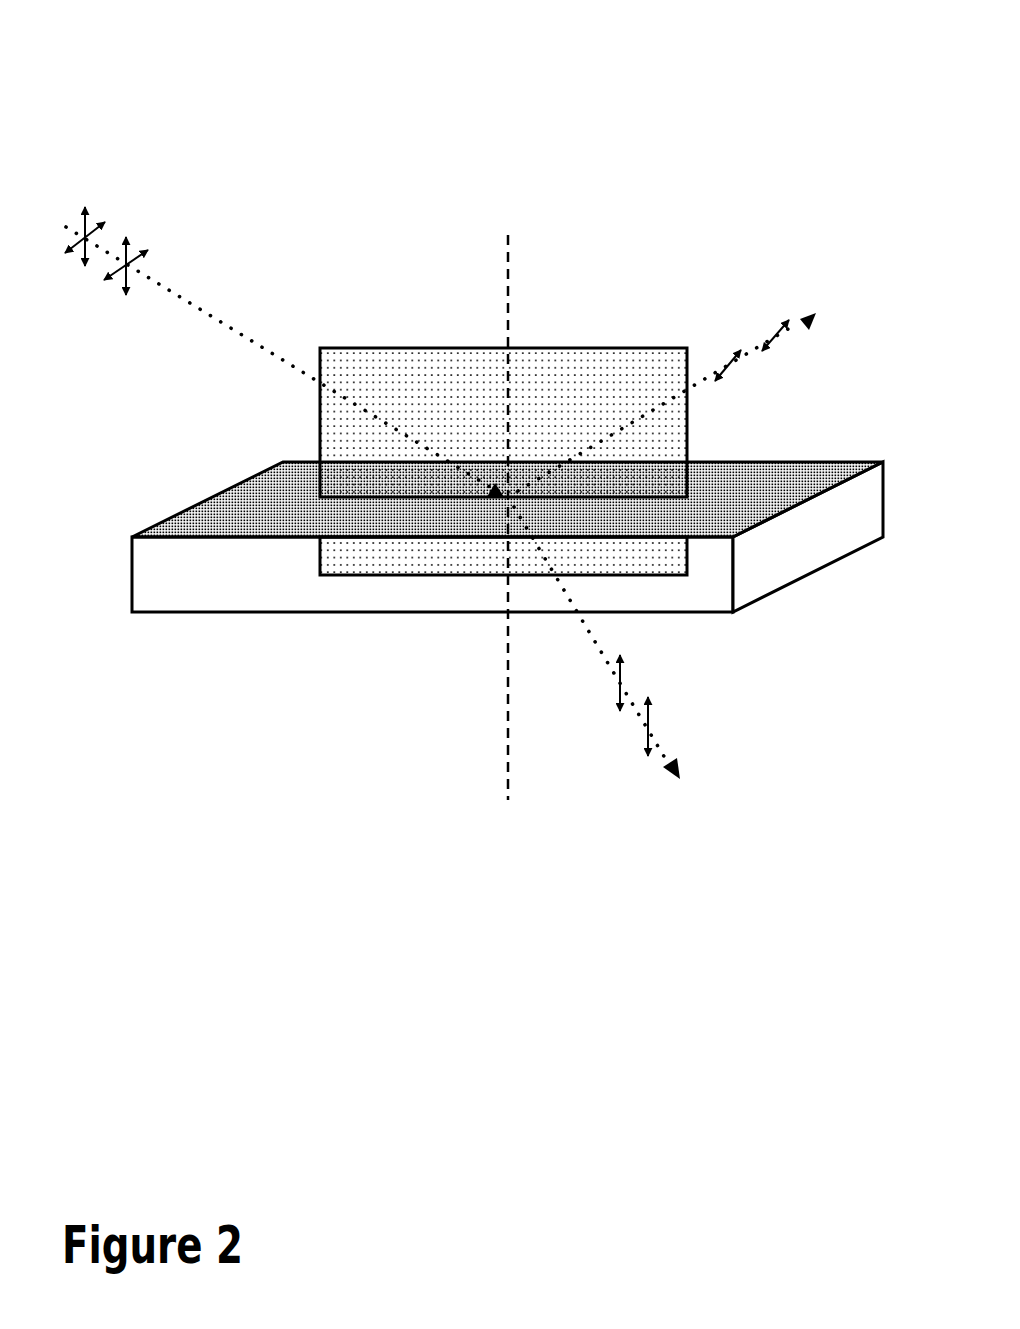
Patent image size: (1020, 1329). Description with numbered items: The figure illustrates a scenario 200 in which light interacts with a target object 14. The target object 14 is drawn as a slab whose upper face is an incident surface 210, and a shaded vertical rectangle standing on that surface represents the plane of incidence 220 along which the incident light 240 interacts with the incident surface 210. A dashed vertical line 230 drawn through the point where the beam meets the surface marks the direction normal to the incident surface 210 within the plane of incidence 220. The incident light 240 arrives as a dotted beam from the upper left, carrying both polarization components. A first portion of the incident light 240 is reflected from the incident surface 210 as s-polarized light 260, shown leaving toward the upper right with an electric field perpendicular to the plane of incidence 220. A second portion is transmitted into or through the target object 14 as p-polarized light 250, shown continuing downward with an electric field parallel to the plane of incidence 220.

The scenario 200 is at (803, 85).
The target object 14 is at (507, 522).
The incident surface 210 is at (352, 525).
The plane of incidence 220 is at (580, 406).
The surface normal 230 is at (458, 507).
The incident light 240 is at (284, 352).
The p-polarized light 250 is at (636, 643).
The s-polarized light 260 is at (667, 390).